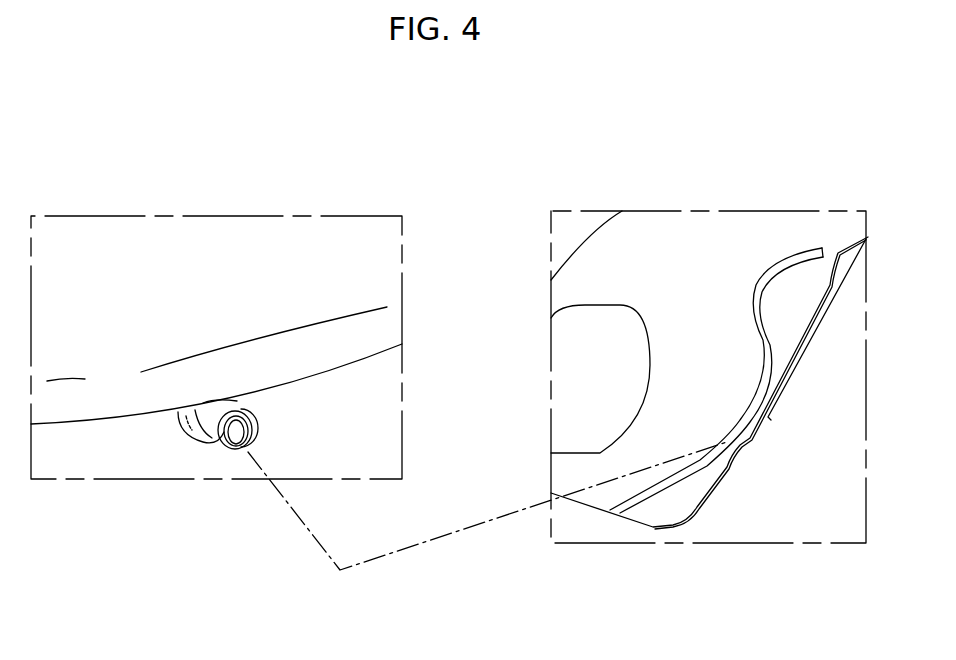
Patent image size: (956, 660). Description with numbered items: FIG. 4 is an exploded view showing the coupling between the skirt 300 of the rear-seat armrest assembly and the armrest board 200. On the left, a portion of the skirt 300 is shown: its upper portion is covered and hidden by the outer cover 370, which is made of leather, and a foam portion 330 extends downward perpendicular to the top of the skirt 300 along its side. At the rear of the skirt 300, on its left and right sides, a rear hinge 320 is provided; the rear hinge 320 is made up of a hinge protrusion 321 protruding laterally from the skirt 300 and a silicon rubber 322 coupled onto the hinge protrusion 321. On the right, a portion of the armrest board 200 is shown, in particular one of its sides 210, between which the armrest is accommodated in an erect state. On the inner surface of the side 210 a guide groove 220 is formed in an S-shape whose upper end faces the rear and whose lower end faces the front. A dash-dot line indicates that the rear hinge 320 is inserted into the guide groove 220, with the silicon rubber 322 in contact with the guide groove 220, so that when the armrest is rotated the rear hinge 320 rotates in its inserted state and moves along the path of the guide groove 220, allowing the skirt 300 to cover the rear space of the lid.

The skirt 300 is at (144, 212).
The outer cover 370 is at (90, 247).
The foam portion 330 is at (83, 400).
The rear hinge 320 is at (216, 506).
The hinge protrusion 321 is at (210, 422).
The silicon rubber 322 is at (243, 450).
The armrest board 200 is at (690, 211).
The side 210 is at (732, 242).
The guide groove 220 is at (672, 485).